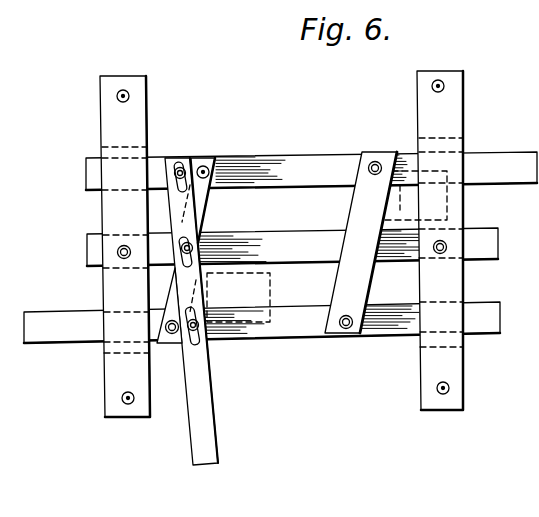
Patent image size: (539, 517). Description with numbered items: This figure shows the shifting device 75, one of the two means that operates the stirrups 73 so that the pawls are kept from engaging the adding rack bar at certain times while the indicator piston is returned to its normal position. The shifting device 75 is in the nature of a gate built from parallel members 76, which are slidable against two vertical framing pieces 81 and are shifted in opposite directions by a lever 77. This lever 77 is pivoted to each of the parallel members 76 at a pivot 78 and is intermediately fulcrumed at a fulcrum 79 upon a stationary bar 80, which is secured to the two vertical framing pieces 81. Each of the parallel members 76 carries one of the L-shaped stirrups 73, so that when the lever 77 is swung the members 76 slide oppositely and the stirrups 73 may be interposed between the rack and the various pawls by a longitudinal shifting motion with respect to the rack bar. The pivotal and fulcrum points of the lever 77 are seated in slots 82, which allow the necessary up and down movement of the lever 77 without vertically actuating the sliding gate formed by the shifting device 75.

The stirrup 73 is at (405, 167).
The shifting device 75 is at (285, 173).
The parallel member 76 is at (335, 167).
The lever 77 is at (202, 424).
The pivot 78 is at (181, 163).
The fulcrum 79 is at (195, 245).
The stationary bar 80 is at (302, 250).
The vertical framing piece 81 is at (113, 216).
The slot 82 is at (200, 343).